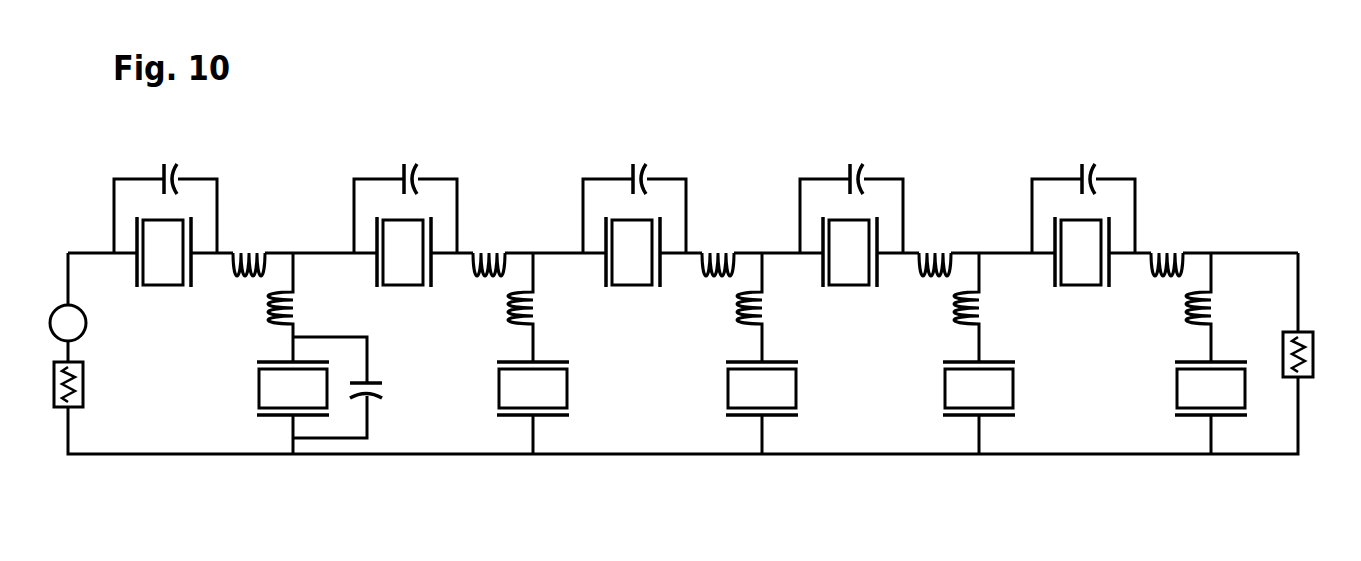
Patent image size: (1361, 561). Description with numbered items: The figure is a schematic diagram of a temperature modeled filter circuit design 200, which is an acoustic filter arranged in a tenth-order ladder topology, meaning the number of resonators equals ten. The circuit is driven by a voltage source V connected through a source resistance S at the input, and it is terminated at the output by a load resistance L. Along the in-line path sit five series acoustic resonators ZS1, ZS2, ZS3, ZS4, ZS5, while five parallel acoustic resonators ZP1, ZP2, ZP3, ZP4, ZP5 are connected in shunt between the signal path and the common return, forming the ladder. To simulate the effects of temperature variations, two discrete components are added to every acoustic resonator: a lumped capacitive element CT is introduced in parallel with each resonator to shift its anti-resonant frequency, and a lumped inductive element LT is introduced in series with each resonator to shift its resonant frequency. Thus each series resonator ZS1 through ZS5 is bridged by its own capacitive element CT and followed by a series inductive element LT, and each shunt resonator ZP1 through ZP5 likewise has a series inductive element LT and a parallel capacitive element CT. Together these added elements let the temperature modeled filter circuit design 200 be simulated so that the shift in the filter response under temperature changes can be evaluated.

The temperature modeled filter circuit design 200 is at (314, 94).
The voltage source V is at (56, 323).
The source resistance S is at (56, 384).
The load resistance L is at (1309, 354).
The lumped capacitive element CT is at (624, 282).
The lumped inductive element LT is at (739, 290).
The series acoustic resonator ZS1 is at (164, 273).
The series acoustic resonator ZS2 is at (404, 273).
The series acoustic resonator ZS3 is at (633, 273).
The series acoustic resonator ZS4 is at (850, 273).
The series acoustic resonator ZS5 is at (1082, 273).
The parallel acoustic resonator ZP1 is at (272, 408).
The parallel acoustic resonator ZP2 is at (513, 408).
The parallel acoustic resonator ZP3 is at (741, 408).
The parallel acoustic resonator ZP4 is at (958, 408).
The parallel acoustic resonator ZP5 is at (1191, 408).